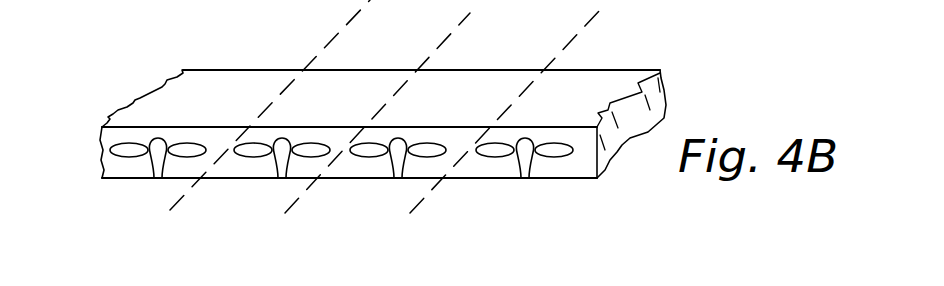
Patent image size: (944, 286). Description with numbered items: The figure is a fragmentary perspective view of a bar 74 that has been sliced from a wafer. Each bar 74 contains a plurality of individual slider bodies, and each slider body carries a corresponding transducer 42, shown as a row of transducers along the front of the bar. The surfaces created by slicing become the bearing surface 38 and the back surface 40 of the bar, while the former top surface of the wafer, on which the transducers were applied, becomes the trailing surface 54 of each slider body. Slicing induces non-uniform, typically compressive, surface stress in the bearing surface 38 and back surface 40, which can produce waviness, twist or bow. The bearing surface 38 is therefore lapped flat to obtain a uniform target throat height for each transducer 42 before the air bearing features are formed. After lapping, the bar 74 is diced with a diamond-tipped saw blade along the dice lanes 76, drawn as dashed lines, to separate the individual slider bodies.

The bearing surface 38 is at (110, 178).
The back surface 40 is at (133, 115).
The transducer 42 is at (160, 181).
The trailing surface 54 is at (113, 163).
The bar 74 is at (622, 53).
The dice lanes 76 is at (342, 33).